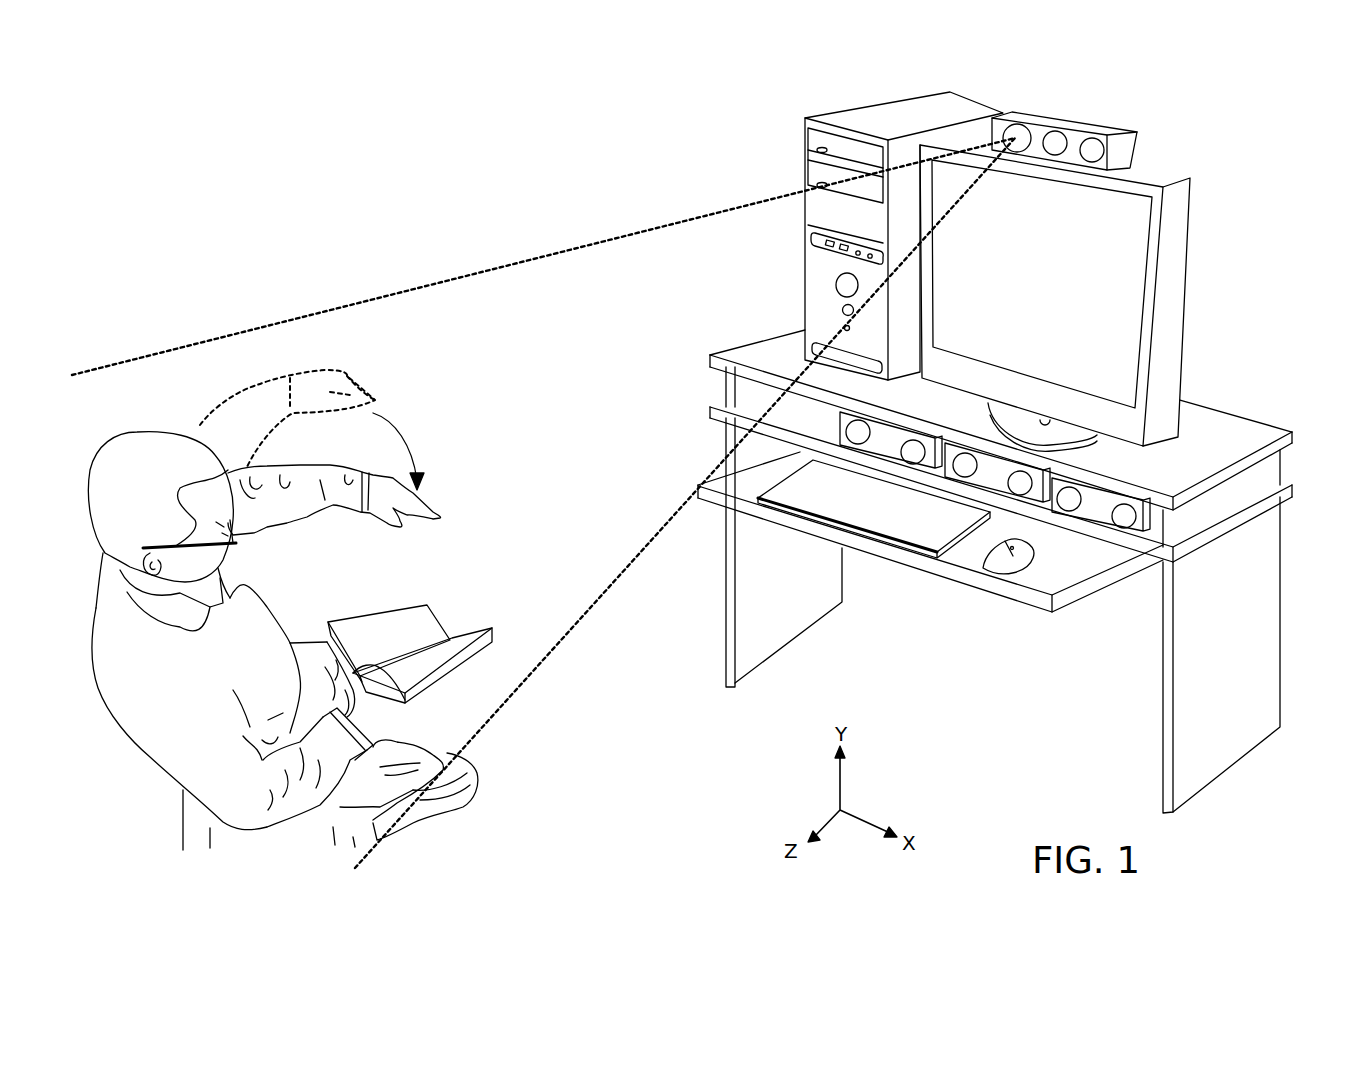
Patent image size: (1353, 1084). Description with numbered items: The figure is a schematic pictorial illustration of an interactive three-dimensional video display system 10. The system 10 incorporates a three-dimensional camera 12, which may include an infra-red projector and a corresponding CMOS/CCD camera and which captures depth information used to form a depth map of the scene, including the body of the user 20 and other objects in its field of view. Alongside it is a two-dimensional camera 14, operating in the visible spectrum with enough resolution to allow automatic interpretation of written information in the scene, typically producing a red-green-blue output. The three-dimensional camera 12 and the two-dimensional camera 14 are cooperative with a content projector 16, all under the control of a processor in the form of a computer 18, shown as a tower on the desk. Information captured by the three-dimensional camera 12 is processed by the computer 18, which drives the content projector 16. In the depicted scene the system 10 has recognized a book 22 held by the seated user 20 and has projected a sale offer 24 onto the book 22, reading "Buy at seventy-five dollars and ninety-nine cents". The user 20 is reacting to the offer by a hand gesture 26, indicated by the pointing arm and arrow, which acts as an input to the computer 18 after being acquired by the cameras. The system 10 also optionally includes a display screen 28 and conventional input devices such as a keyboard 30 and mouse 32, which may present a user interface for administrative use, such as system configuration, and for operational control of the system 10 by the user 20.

The interactive three-dimensional video display system 10 is at (1257, 817).
The 3-D camera 12 is at (1103, 135).
The 2-D camera 14 is at (1062, 130).
The content projector 16 is at (1033, 120).
The computer 18 is at (834, 108).
The user 20 is at (152, 432).
The book 22 is at (468, 627).
The sale offer 24 is at (381, 616).
The hand gesture 26 is at (407, 432).
The display screen 28 is at (1178, 268).
The keyboard 30 is at (908, 537).
The mouse 32 is at (1000, 563).